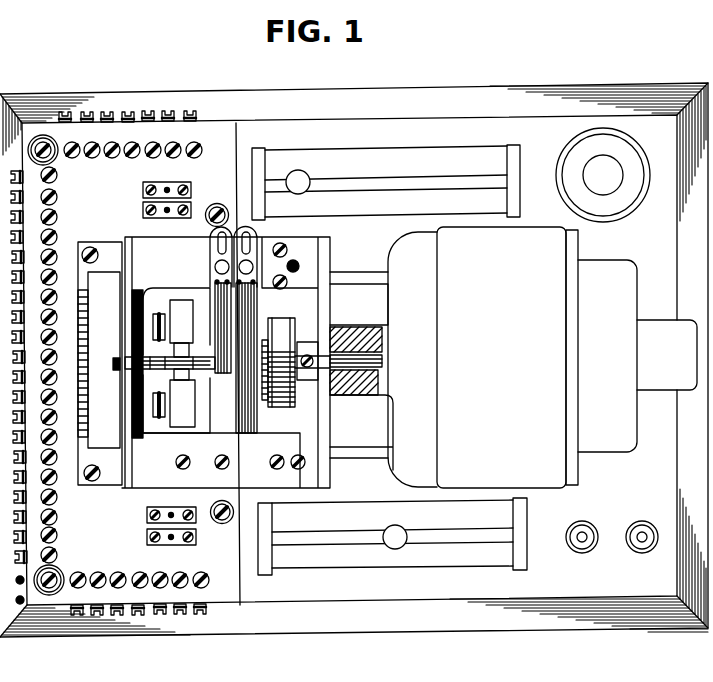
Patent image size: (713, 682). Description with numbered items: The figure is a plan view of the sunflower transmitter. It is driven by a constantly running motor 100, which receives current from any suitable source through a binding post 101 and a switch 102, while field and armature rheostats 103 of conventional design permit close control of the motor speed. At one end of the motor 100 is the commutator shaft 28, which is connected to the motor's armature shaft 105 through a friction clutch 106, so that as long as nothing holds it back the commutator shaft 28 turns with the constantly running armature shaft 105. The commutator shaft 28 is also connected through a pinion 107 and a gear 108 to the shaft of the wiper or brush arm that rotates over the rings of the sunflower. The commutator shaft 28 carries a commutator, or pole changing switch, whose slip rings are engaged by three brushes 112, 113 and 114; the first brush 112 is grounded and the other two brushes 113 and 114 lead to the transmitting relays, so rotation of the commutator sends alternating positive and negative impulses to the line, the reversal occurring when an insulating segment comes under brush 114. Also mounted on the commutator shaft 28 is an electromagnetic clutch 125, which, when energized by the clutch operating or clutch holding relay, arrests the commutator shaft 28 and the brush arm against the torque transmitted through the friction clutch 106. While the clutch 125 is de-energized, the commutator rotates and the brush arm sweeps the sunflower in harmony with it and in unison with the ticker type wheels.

The commutator shaft 28 is at (158, 364).
The motor 100 is at (620, 320).
The binding post 101 is at (637, 525).
The switch 102 is at (628, 208).
The field and armature rheostats 103 is at (365, 162).
The armature shaft 105 is at (356, 352).
The friction clutch 106 is at (278, 330).
The pinion 107 is at (150, 369).
The gear 108 is at (147, 427).
The brush 112 is at (220, 307).
The brush 113 is at (246, 308).
The brush 114 is at (256, 418).
The electromagnetic clutch 125 is at (188, 398).